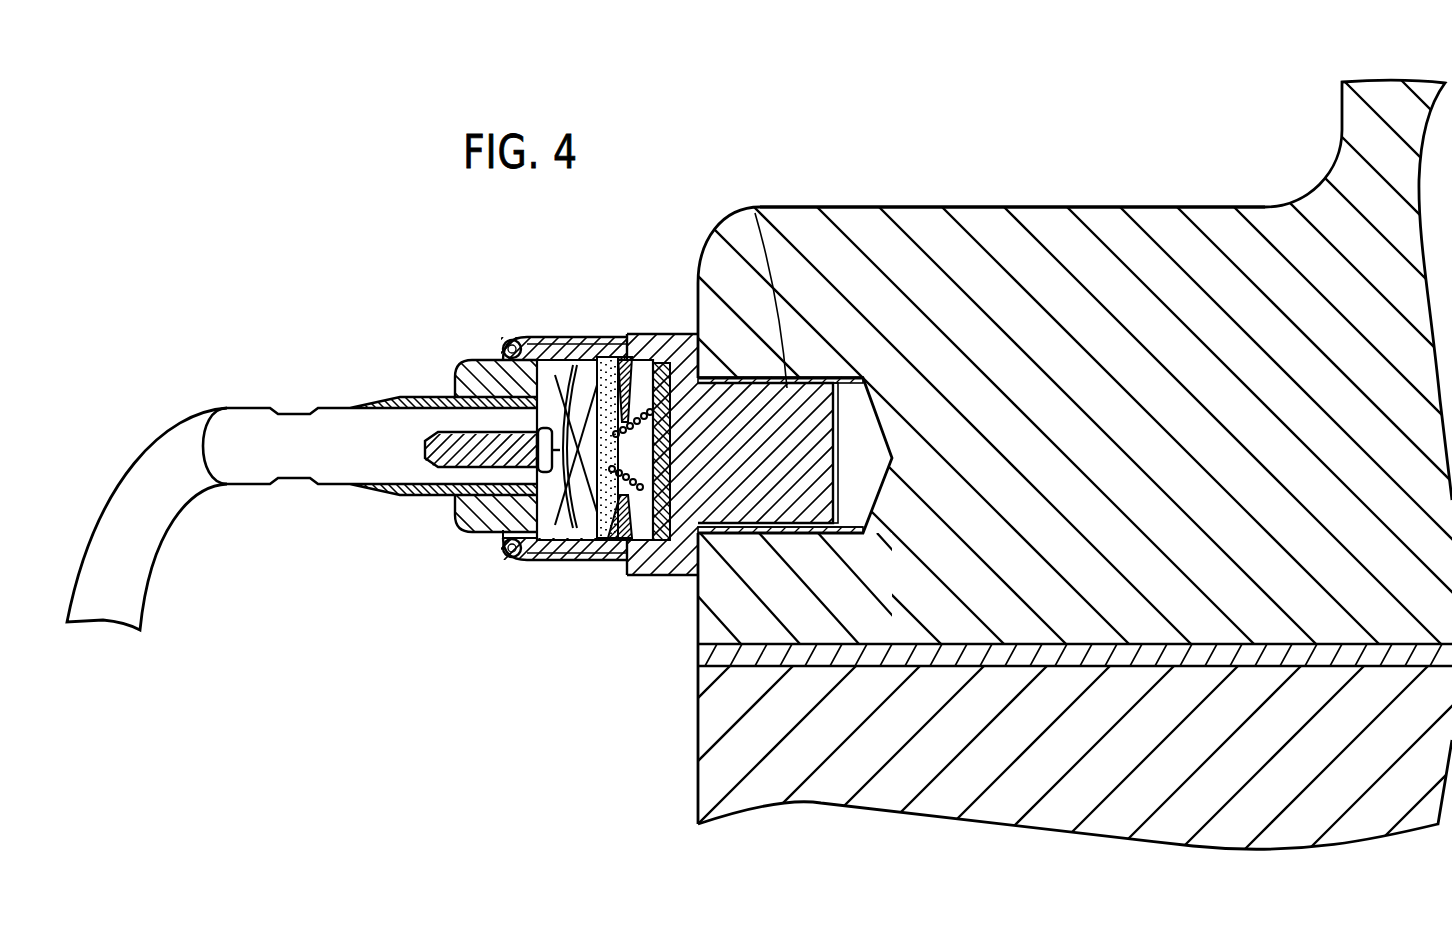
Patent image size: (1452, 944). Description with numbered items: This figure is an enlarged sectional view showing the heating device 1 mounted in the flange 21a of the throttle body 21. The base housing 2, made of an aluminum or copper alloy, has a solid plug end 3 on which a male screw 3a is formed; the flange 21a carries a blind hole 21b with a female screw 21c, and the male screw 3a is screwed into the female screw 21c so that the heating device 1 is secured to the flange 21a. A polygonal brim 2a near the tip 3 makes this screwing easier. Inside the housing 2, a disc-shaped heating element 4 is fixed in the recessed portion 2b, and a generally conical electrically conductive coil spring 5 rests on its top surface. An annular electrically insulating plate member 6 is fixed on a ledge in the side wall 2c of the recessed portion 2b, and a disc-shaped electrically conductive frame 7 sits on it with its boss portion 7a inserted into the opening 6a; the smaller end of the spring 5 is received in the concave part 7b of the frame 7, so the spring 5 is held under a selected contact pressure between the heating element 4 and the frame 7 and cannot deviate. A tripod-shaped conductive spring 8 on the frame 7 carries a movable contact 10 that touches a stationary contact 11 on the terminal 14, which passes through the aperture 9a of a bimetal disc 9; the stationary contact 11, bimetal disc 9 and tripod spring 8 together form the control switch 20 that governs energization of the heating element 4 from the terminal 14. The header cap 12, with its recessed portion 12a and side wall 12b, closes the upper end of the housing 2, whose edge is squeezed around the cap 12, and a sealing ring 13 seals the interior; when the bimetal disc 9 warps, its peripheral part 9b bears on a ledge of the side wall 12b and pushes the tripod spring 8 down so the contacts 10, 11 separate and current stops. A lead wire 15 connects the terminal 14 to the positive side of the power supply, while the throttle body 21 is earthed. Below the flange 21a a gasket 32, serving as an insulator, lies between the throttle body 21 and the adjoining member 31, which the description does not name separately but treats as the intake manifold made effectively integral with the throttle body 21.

The heating device 1 is at (423, 386).
The base housing 2 is at (690, 322).
The polygonal brim 2a is at (678, 338).
The recessed portion 2b is at (648, 575).
The side wall of the recessed portion 2c is at (640, 340).
The plug end 3 is at (698, 280).
The male screw 3a is at (750, 395).
The heating element 4 is at (650, 338).
The coil spring 5 is at (607, 355).
The electrically insulating plate member 6 is at (628, 545).
The opening 6a is at (622, 545).
The electrically conductive frame 7 is at (583, 540).
The boss portion 7a is at (565, 540).
The concave part 7b is at (590, 345).
The tripod spring 8 is at (596, 352).
The bimetal disc 9 is at (512, 357).
The aperture 9a is at (505, 355).
The peripheral part 9b is at (503, 550).
The movable contact 10 is at (465, 497).
The stationary contact 11 is at (483, 386).
The header cap 12 is at (407, 400).
The recessed portion of the cap 12a is at (533, 338).
The side wall of the cap recess 12b is at (523, 567).
The sealing ring 13 is at (503, 557).
The terminal 14 is at (347, 420).
The lead wire 15 is at (120, 488).
The control switch 20 is at (505, 505).
The throttle body 21 is at (1352, 120).
The flange 21a is at (855, 215).
The blind hole 21b is at (863, 410).
The female screw 21c is at (848, 535).
The lower member 31 is at (698, 765).
The gasket 32 is at (697, 655).